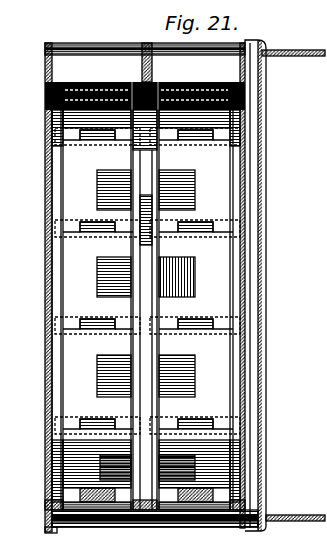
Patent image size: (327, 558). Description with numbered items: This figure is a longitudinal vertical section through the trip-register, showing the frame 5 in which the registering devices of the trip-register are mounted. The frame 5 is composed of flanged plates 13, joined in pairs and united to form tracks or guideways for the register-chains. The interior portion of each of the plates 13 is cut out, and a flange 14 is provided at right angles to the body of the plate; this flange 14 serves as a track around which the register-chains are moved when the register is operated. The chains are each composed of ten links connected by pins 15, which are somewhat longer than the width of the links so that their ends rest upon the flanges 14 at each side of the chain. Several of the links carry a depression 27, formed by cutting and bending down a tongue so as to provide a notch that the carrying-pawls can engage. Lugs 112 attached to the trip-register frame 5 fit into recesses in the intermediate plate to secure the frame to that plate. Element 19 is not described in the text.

The frame 5 is at (55, 300).
The flanged plates 13 is at (52, 78).
The flange 14 is at (62, 84).
The pins 15 is at (80, 528).
The cover plate 19 is at (93, 54).
The depression 27 is at (45, 113).
The lugs 112 is at (287, 51).